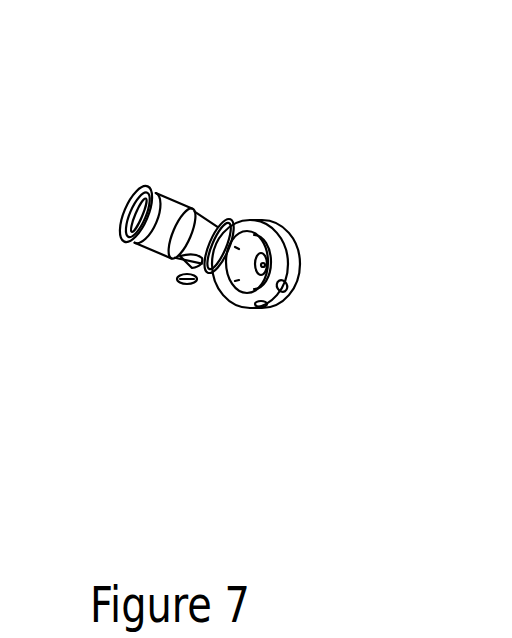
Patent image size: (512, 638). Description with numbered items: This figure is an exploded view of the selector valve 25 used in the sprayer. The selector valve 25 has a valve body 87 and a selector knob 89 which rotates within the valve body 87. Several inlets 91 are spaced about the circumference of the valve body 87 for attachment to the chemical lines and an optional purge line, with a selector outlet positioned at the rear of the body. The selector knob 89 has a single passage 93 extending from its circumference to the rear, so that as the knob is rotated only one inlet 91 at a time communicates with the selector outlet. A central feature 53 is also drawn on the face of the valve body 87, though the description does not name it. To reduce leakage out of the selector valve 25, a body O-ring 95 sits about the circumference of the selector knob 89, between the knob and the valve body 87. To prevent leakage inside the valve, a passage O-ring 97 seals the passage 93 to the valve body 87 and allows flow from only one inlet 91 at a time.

The selector valve 25 is at (149, 80).
The selector knob 89 is at (170, 203).
The body O-ring 95 is at (222, 222).
The valve body 87 is at (290, 242).
The central hub 53 is at (265, 264).
The inlets 91 is at (284, 291).
The passage 93 is at (183, 257).
The passage O-ring 97 is at (190, 285).